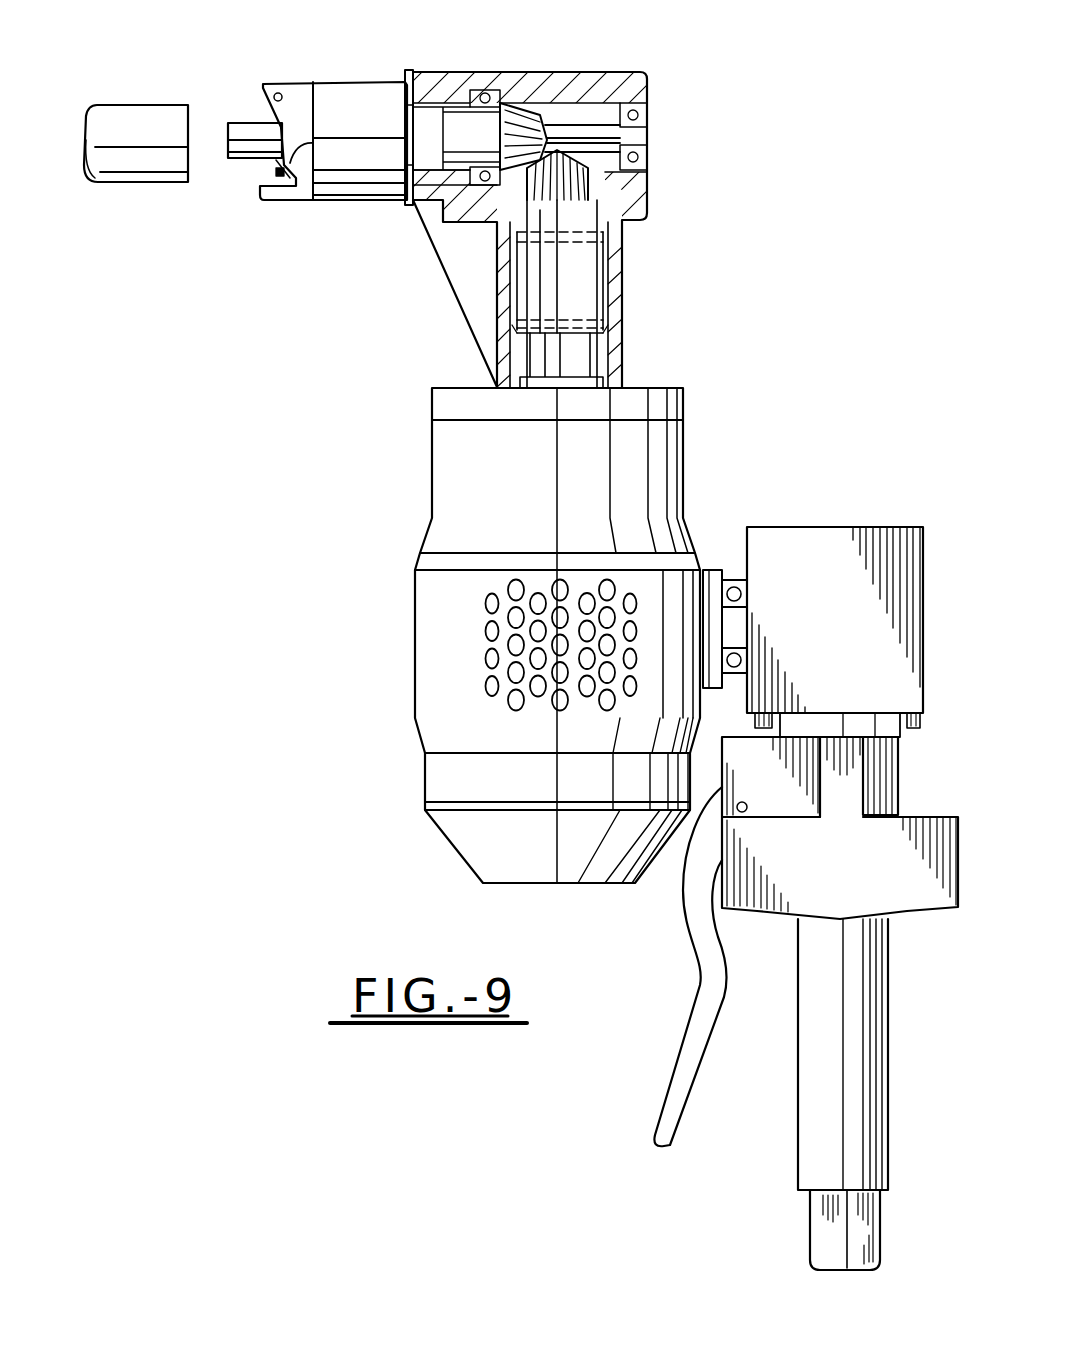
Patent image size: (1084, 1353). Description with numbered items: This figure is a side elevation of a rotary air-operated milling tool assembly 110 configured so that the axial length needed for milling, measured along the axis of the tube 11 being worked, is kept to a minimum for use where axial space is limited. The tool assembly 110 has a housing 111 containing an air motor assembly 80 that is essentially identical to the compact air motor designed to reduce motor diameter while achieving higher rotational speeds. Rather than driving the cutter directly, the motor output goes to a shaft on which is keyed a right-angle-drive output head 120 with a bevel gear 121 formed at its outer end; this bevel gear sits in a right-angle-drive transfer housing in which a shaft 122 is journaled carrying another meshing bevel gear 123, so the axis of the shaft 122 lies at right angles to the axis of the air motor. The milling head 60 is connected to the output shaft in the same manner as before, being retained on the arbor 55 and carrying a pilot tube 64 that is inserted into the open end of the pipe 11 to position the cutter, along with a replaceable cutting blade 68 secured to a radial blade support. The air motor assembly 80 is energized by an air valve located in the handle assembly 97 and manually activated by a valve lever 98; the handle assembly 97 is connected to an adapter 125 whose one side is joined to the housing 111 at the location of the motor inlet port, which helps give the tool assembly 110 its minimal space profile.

The workpiece 11 is at (138, 104).
The pilot tube 64 is at (238, 122).
The milling head 60 is at (310, 72).
The arbor 55 is at (402, 82).
The cutting blade 68 is at (264, 178).
The right-angle-drive output head 120 is at (662, 110).
The bevel gear 121 is at (598, 172).
The shaft 122 is at (575, 130).
The bevel gear 123 is at (530, 105).
The air motor assembly 80 is at (693, 385).
The milling tool assembly 110 is at (488, 598).
The housing 111 is at (412, 658).
The adapter 125 is at (818, 527).
The valve lever 98 is at (677, 1060).
The handle assembly 97 is at (812, 1168).